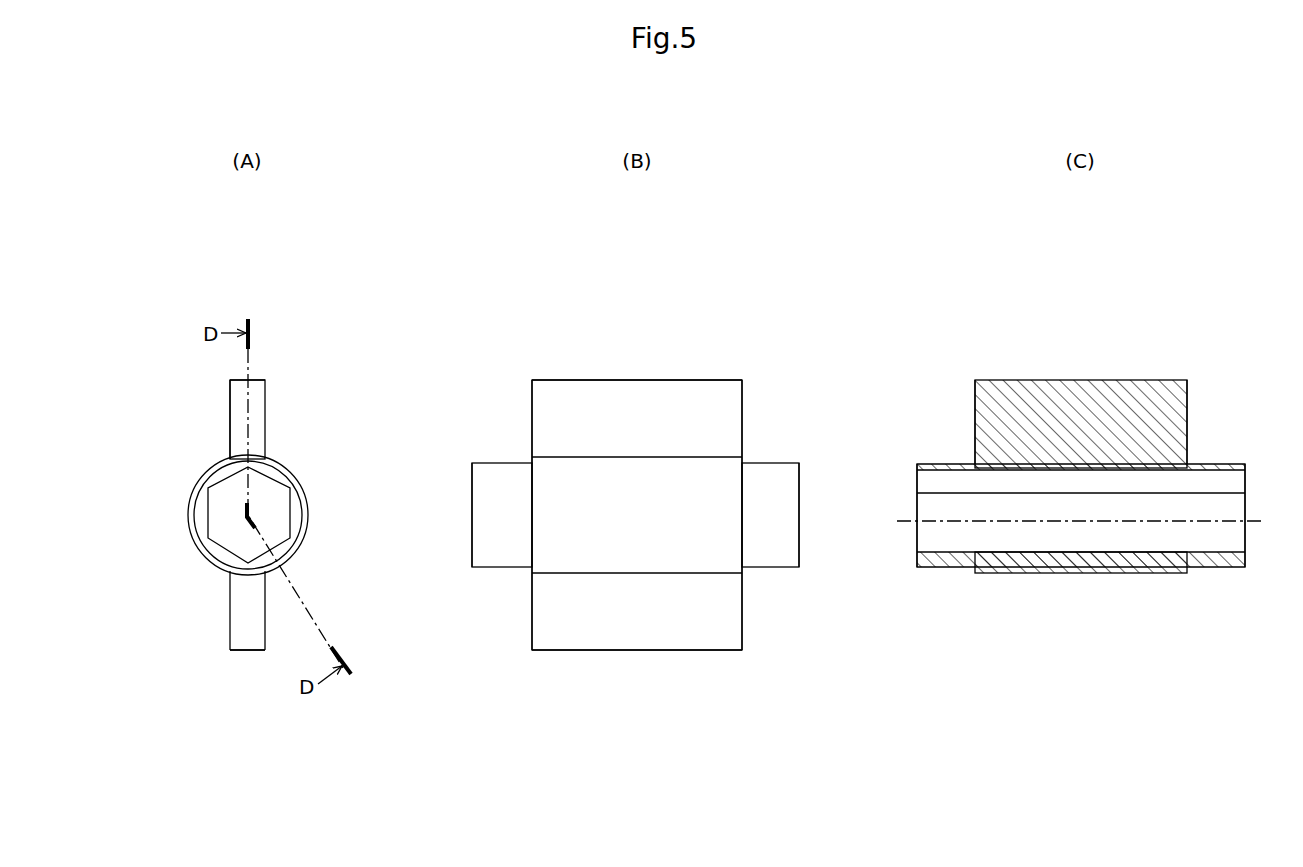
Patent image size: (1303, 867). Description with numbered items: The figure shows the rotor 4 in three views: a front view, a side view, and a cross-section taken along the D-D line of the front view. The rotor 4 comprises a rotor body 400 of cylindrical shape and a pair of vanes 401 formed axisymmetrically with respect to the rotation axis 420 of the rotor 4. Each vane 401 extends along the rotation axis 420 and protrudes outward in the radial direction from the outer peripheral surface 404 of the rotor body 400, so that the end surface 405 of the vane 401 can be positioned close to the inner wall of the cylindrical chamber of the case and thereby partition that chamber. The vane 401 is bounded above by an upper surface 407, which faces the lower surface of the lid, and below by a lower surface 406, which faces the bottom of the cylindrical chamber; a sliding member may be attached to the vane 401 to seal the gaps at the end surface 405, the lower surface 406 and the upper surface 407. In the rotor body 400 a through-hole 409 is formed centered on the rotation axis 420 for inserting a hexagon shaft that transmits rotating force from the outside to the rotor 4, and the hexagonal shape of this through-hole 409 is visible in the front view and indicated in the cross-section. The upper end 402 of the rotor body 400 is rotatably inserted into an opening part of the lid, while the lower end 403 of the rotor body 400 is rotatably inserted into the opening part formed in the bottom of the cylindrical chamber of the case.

The rotor 4 is at (323, 228).
The rotor body 400 is at (292, 470).
The vane 401 is at (230, 421).
The upper end 402 is at (472, 577).
The lower end 403 is at (799, 577).
The outer peripheral surface 404 is at (307, 512).
The end surface 405 is at (253, 380).
The lower surface 406 is at (742, 412).
The upper surface 407 is at (254, 428).
The through-hole 409 is at (222, 505).
The rotation axis 420 is at (900, 522).